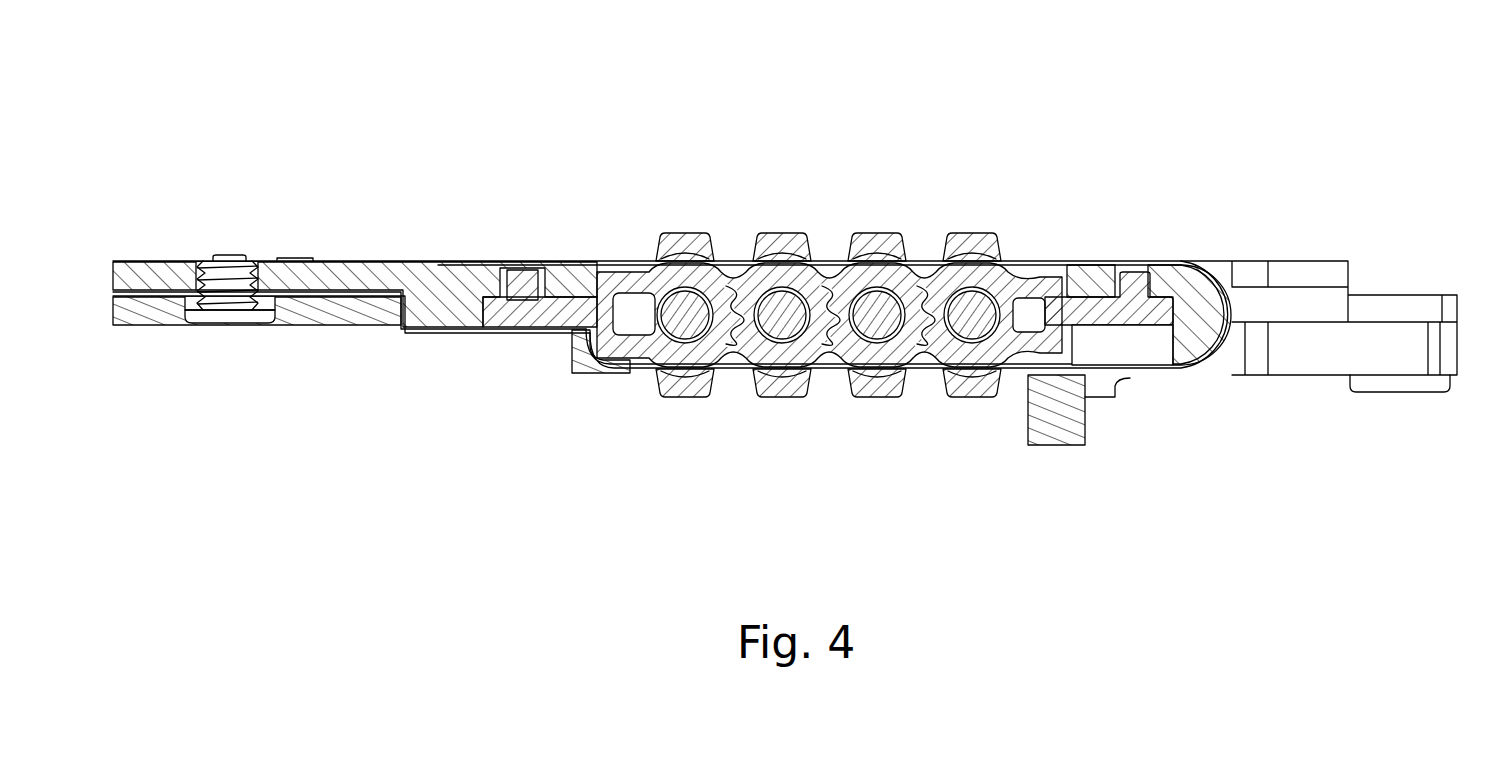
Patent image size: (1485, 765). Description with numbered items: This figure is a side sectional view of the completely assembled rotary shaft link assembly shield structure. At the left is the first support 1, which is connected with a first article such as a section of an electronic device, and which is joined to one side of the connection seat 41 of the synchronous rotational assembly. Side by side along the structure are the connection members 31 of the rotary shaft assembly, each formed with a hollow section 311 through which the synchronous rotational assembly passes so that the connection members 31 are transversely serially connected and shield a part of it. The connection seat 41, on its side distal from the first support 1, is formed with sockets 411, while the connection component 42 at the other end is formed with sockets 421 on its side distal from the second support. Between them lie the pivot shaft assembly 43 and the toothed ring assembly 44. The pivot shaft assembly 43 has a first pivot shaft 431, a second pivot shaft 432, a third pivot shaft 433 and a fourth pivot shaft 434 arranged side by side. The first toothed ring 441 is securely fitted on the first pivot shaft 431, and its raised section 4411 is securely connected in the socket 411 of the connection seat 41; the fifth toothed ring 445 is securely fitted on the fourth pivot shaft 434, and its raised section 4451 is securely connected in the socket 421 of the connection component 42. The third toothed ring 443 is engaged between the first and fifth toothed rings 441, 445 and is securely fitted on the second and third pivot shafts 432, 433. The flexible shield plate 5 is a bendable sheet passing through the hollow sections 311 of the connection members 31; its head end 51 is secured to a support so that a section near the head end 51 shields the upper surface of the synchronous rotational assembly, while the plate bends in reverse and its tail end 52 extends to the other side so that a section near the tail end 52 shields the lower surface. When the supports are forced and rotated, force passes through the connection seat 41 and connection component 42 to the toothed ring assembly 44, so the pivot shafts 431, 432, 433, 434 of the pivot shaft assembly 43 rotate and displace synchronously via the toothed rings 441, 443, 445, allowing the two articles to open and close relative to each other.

The first support 1 is at (148, 322).
The flexible shield plate 5 is at (1230, 352).
The connection member 31 is at (700, 235).
The connection seat 41 is at (360, 268).
The connection component 42 is at (1212, 302).
The pivot shaft assembly 43 is at (828, 145).
The toothed ring assembly 44 is at (832, 408).
The head end 51 is at (330, 294).
The tail end 52 is at (608, 262).
The hollow section 311 is at (733, 262).
The socket 411 is at (515, 272).
The socket 421 is at (1126, 263).
The first pivot shaft 431 is at (678, 233).
The second pivot shaft 432 is at (775, 233).
The third pivot shaft 433 is at (870, 233).
The fourth pivot shaft 434 is at (972, 178).
The first toothed ring 441 is at (690, 398).
The third toothed ring 443 is at (832, 378).
The fifth toothed ring 445 is at (966, 426).
The raised section 4411 is at (535, 330).
The raised section 4451 is at (1148, 290).